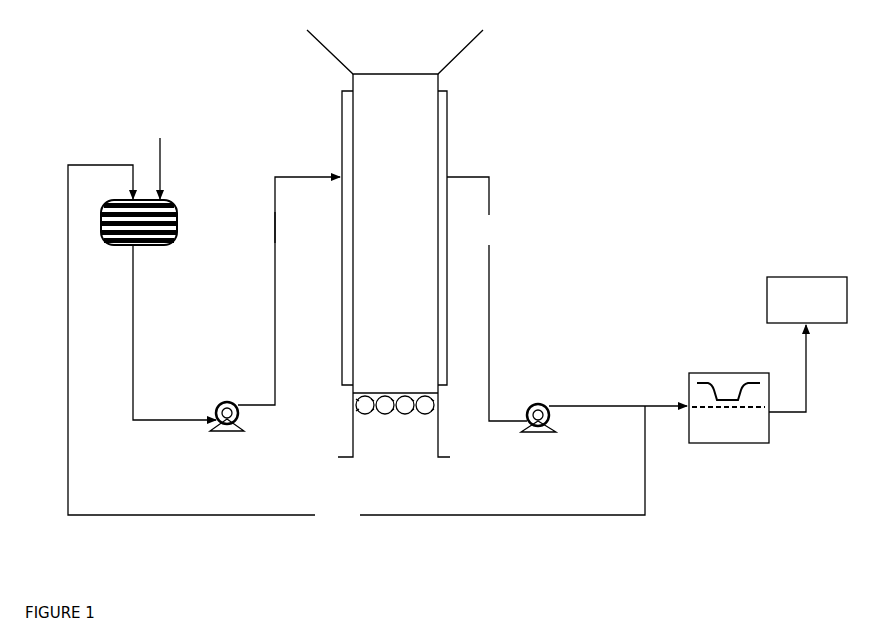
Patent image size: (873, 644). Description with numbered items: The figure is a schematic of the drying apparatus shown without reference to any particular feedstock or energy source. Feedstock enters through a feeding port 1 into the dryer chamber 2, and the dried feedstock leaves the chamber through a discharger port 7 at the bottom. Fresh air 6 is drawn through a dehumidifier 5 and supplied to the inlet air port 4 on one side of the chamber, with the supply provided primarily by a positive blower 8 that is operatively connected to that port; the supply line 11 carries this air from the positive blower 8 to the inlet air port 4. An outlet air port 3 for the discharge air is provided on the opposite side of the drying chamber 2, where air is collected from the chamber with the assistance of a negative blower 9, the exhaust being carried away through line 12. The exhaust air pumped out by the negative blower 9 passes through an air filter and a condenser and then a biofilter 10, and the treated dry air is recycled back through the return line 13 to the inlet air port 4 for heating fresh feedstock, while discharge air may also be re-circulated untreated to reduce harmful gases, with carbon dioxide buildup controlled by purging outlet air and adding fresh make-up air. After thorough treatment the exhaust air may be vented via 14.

The feeding port 1 is at (393, 56).
The dryer chamber 2 is at (440, 81).
The outlet air port 3 is at (449, 136).
The inlet air port 4 is at (340, 136).
The dehumidifier 5 is at (151, 222).
The air 6 is at (162, 154).
The discharger port 7 is at (395, 416).
The positive blower 8 is at (227, 402).
The negative blower 9 is at (538, 400).
The biofilter 10 is at (729, 419).
The feed pipe 11 is at (289, 291).
The outlet pipe 12 is at (487, 299).
The recirculation pipe 13 is at (377, 344).
The vent 14 is at (807, 344).